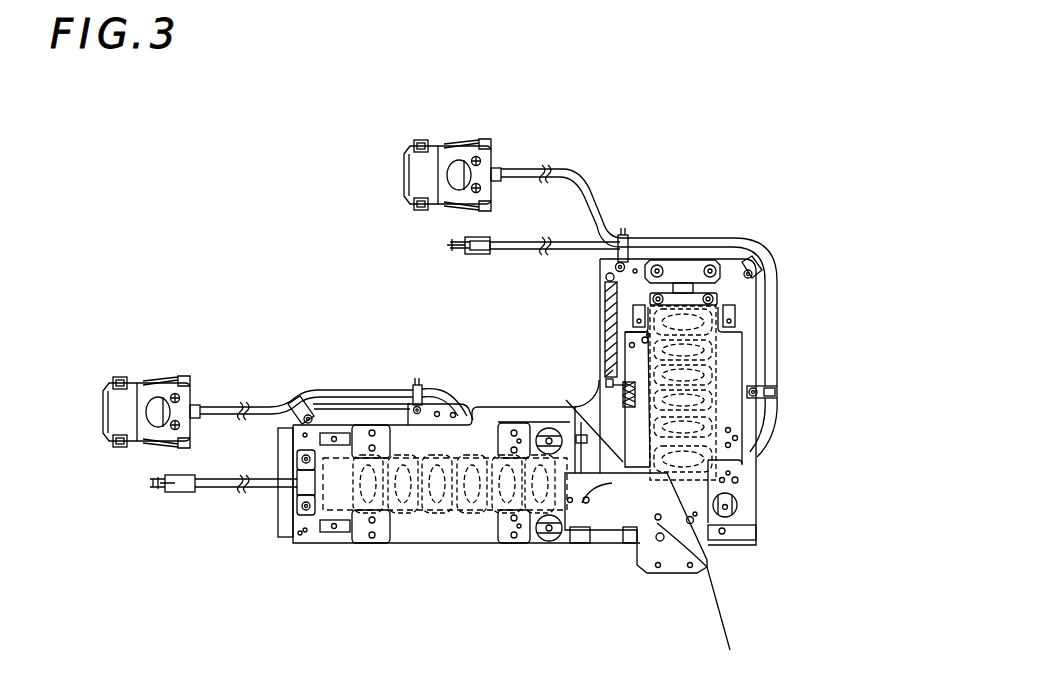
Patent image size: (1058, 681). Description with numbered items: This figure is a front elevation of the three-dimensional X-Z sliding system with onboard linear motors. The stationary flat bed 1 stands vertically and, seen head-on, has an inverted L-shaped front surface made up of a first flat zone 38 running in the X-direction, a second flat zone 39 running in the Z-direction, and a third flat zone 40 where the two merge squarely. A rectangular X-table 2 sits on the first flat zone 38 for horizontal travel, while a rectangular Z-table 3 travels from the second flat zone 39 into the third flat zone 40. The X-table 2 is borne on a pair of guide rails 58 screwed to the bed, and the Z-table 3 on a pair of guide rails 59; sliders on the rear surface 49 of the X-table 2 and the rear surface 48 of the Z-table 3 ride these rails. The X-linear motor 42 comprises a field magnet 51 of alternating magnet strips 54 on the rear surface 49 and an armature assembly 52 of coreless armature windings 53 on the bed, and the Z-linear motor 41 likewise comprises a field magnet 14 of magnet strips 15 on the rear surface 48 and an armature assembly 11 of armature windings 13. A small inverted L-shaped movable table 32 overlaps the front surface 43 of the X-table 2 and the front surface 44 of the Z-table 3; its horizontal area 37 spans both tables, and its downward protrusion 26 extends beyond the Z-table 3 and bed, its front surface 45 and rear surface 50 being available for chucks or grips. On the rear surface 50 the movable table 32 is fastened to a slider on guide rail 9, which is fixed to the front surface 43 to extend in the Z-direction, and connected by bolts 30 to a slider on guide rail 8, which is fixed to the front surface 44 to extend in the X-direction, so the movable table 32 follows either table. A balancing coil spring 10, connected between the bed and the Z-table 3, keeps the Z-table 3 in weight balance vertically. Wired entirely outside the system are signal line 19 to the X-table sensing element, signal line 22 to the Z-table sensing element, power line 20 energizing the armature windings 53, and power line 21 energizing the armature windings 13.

The flat bed 1 is at (335, 543).
The X-table 2 is at (420, 520).
The Z-table 3 is at (613, 402).
The guide rail 8 is at (717, 527).
The guide rail 9 is at (597, 510).
The balancing coil spring 10 is at (604, 318).
The armature assembly 11 is at (780, 408).
The armature windings 13 is at (775, 322).
The field magnet 14 is at (700, 290).
The magnet strips 15 is at (768, 265).
The signal line 19 is at (226, 404).
The power line 20 is at (214, 490).
The power line 21 is at (528, 251).
The signal line 22 is at (577, 192).
The protrusion 26 is at (668, 560).
The bolts 30 is at (667, 575).
The movable table 32 is at (678, 553).
The horizontal area 37 is at (608, 517).
The first flat zone 38 is at (488, 535).
The second flat zone 39 is at (728, 383).
The third flat zone 40 is at (575, 405).
The Z-linear motor 41 is at (765, 300).
The X-linear motor 42 is at (408, 455).
The front surface 43 is at (470, 520).
The front surface 44 is at (682, 437).
The front surface 45 is at (632, 508).
The rear surface 48 is at (757, 352).
The rear surface 49 is at (393, 520).
The rear surface 50 is at (575, 545).
The field magnet 51 is at (492, 445).
The armature assembly 52 is at (452, 520).
The armature windings 53 is at (385, 535).
The magnet strips 54 is at (290, 545).
The guide rails 58 is at (325, 527).
The guide rails 59 is at (638, 305).